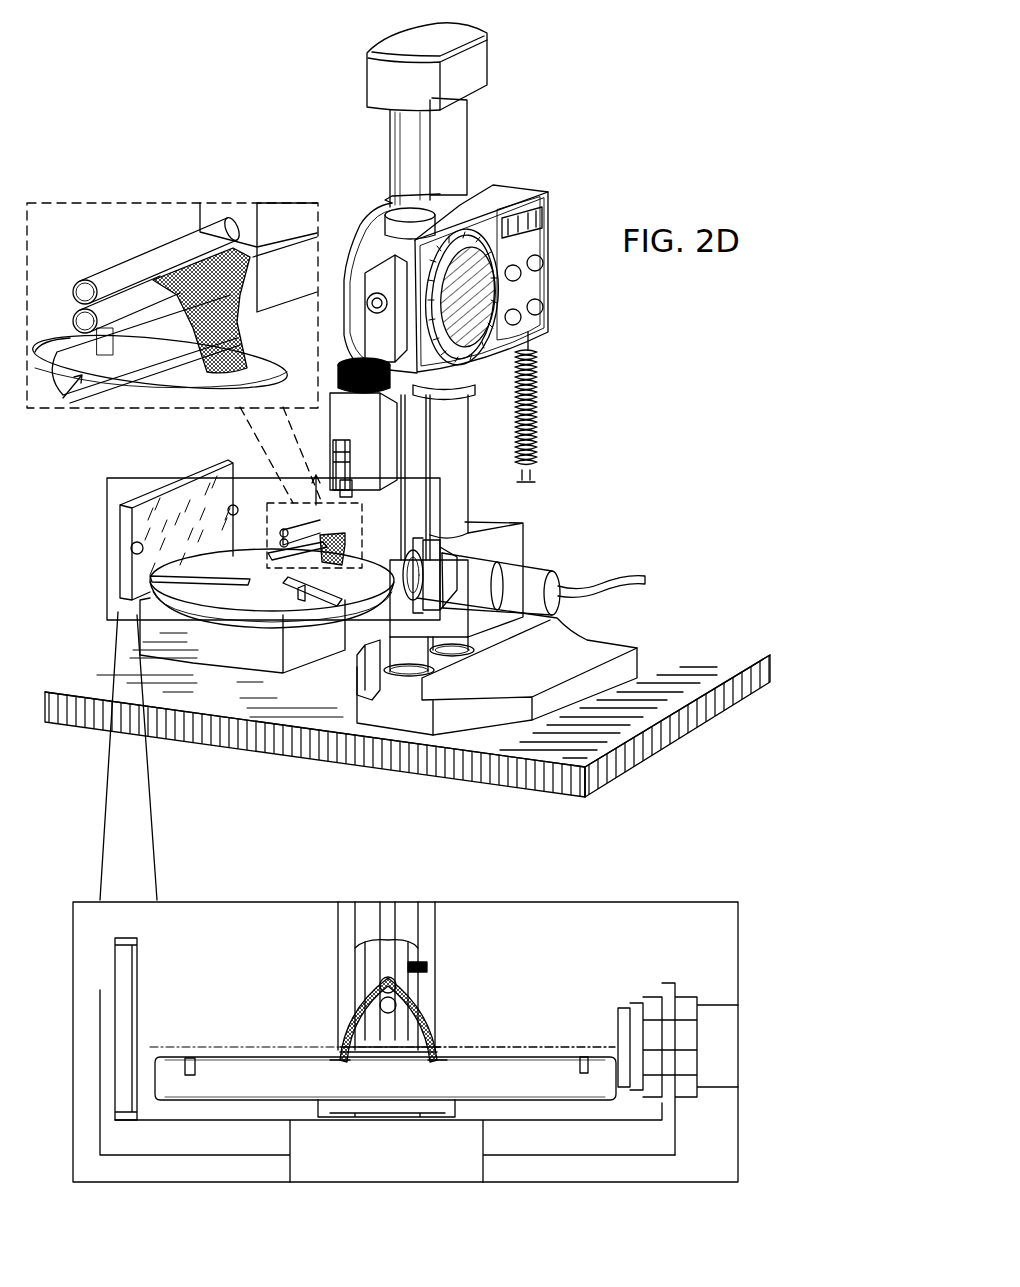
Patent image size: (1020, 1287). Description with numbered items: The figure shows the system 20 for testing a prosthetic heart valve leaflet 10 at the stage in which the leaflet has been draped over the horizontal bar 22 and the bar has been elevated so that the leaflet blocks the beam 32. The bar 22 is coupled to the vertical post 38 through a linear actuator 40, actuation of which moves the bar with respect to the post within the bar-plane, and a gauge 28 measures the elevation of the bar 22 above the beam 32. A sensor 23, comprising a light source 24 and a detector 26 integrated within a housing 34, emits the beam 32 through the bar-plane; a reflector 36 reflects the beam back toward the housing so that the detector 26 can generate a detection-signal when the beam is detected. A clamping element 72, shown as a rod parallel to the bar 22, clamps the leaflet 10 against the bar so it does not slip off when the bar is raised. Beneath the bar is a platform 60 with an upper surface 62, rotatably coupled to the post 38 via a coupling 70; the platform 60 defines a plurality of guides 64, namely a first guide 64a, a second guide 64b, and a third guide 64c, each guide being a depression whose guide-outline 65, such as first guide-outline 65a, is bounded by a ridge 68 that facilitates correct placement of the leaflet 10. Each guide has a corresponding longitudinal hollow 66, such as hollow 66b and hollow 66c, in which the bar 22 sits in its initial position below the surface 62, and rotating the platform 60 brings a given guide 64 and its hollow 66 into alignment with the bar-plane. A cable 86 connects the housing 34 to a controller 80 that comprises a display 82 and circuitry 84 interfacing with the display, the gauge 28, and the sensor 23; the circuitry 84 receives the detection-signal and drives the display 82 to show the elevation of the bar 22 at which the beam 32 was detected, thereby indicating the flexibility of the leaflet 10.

The prosthetic heart valve leaflet 10 is at (228, 280).
The system 20 is at (658, 372).
The horizontal bar 22 is at (146, 295).
The sensor 23 is at (497, 628).
The light source 24 is at (497, 628).
The detector 26 is at (490, 598).
The gauge 28 is at (470, 340).
The beam 32 is at (294, 384).
The housing 34 is at (490, 564).
The reflector 36 is at (157, 542).
The post 38 is at (405, 152).
The linear actuator 40 is at (370, 212).
The platform 60 is at (165, 625).
The surface 62 is at (492, 1080).
The guides 64 is at (193, 592).
The first guide 64a is at (70, 404).
The second guide 64b is at (235, 582).
The third guide 64c is at (290, 597).
The guide-outline 65 is at (63, 295).
The first guide-outline 65a is at (66, 345).
The longitudinal hollow 66 is at (405, 865).
The hollow 66b is at (190, 1058).
The hollow 66c is at (290, 597).
The ridge 68 is at (55, 383).
The coupling 70 is at (227, 652).
The clamping element 72 is at (152, 232).
The controller 80 is at (540, 288).
The display 82 is at (542, 220).
The circuitry 84 is at (546, 200).
The cable 86 is at (531, 385).